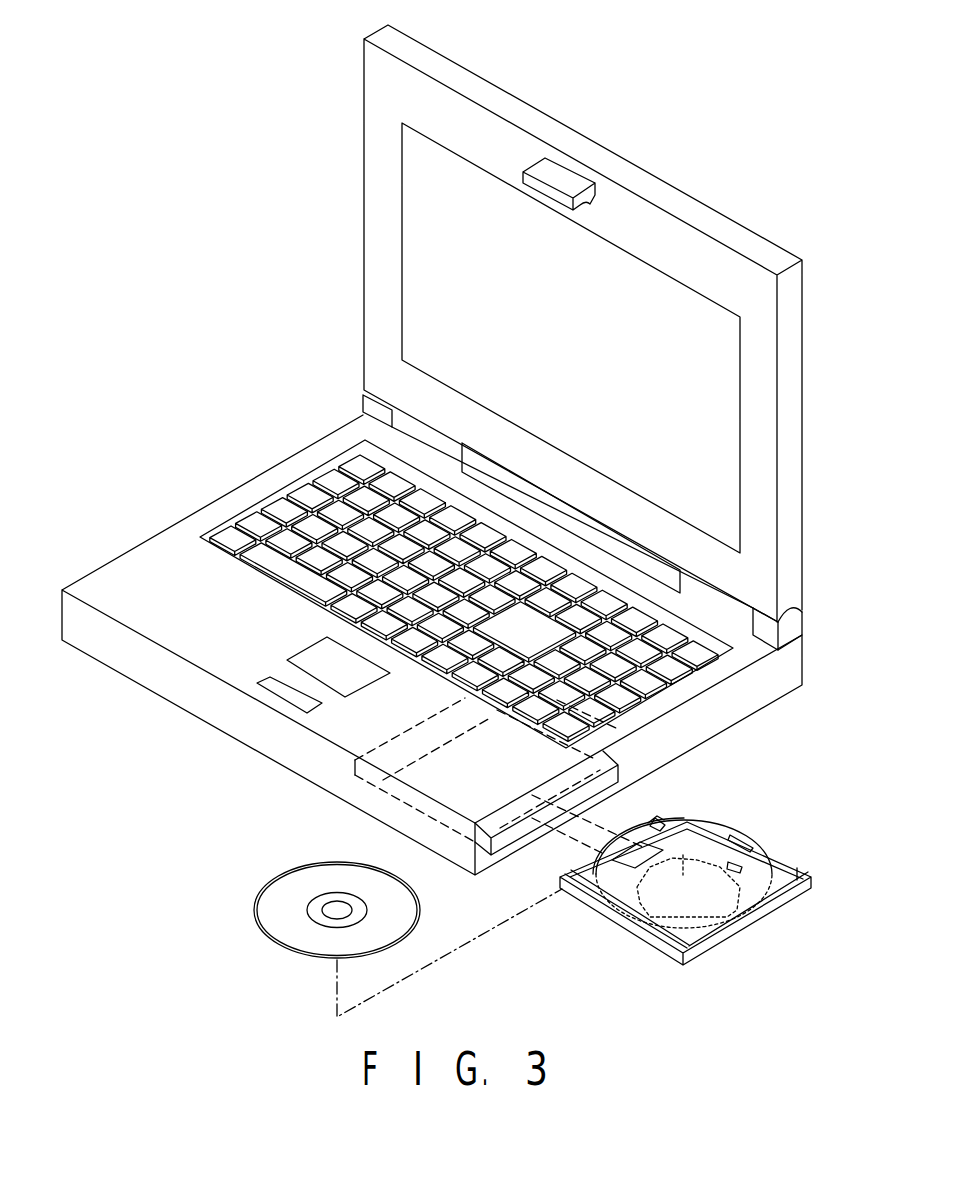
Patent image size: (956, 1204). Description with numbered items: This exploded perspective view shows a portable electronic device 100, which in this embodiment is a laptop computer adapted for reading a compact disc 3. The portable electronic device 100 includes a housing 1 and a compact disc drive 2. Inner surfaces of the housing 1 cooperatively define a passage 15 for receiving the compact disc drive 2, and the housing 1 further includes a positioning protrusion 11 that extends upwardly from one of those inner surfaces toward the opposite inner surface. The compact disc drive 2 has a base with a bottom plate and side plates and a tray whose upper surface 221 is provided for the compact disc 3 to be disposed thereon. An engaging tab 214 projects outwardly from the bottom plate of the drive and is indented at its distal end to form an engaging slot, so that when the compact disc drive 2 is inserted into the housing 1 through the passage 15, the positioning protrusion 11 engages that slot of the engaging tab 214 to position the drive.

The portable electronic device 100 is at (258, 248).
The housing 1 is at (128, 660).
The positioning protrusion 11 is at (453, 722).
The passage 15 is at (531, 830).
The compact disc drive 2 is at (610, 915).
The engaging tab 214 is at (641, 832).
The upper surface 221 is at (697, 930).
The compact disc 3 is at (288, 895).